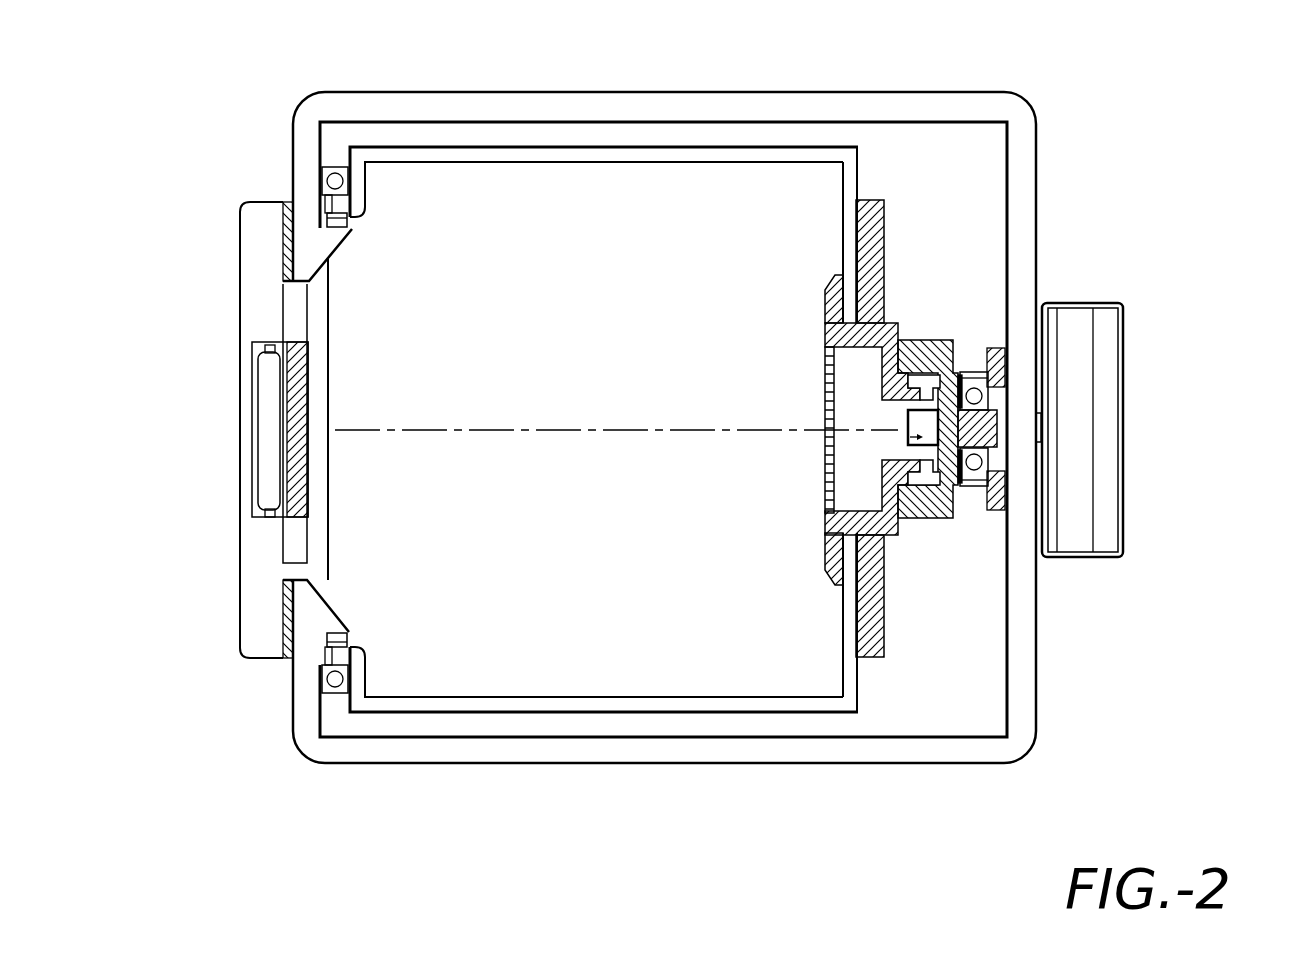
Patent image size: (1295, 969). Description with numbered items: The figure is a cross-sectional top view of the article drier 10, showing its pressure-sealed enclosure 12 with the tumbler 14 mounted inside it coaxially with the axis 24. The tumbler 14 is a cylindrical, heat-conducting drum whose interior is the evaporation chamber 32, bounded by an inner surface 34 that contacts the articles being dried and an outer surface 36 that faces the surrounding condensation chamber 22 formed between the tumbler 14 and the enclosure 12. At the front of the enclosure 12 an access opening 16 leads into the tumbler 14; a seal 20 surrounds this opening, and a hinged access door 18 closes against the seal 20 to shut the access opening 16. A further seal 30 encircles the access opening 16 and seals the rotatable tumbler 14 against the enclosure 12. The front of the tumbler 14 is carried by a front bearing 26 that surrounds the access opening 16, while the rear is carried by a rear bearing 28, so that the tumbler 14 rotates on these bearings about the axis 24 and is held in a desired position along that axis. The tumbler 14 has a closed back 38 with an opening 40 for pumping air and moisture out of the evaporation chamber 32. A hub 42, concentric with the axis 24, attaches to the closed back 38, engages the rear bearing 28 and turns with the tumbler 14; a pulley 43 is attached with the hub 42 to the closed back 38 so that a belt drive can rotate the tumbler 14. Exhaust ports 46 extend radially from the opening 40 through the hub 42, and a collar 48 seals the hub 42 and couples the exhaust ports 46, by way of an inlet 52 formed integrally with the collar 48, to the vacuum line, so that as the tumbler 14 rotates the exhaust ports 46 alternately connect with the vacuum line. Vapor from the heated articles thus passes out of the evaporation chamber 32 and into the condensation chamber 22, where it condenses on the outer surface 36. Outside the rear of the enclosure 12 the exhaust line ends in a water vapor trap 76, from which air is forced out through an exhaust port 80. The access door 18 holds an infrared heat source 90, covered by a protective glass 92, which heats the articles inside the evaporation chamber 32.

The article drier 10 is at (256, 128).
The enclosure 12 is at (583, 91).
The tumbler 14 is at (660, 150).
The access opening 16 is at (604, 428).
The access door 18 is at (243, 266).
The seal 20 is at (292, 244).
The condensation chamber 22 is at (968, 189).
The axis 24 is at (526, 428).
The front bearing 26 is at (334, 176).
The rear bearing 28 is at (975, 388).
The seal 30 is at (348, 229).
The evaporation chamber 32 is at (585, 486).
The inner surface 34 is at (510, 164).
The outer surface 36 is at (549, 148).
The closed back 38 is at (841, 221).
The opening 40 is at (846, 440).
The hub 42 is at (887, 323).
The pulley 43 is at (870, 235).
The exhaust ports 46 is at (926, 392).
The collar 48 is at (930, 339).
The inlet 52 is at (908, 439).
The water vapor trap 76 is at (1079, 302).
The exhaust port 80 is at (1115, 403).
The infrared heat source 90 is at (270, 428).
The protective glass 92 is at (300, 392).